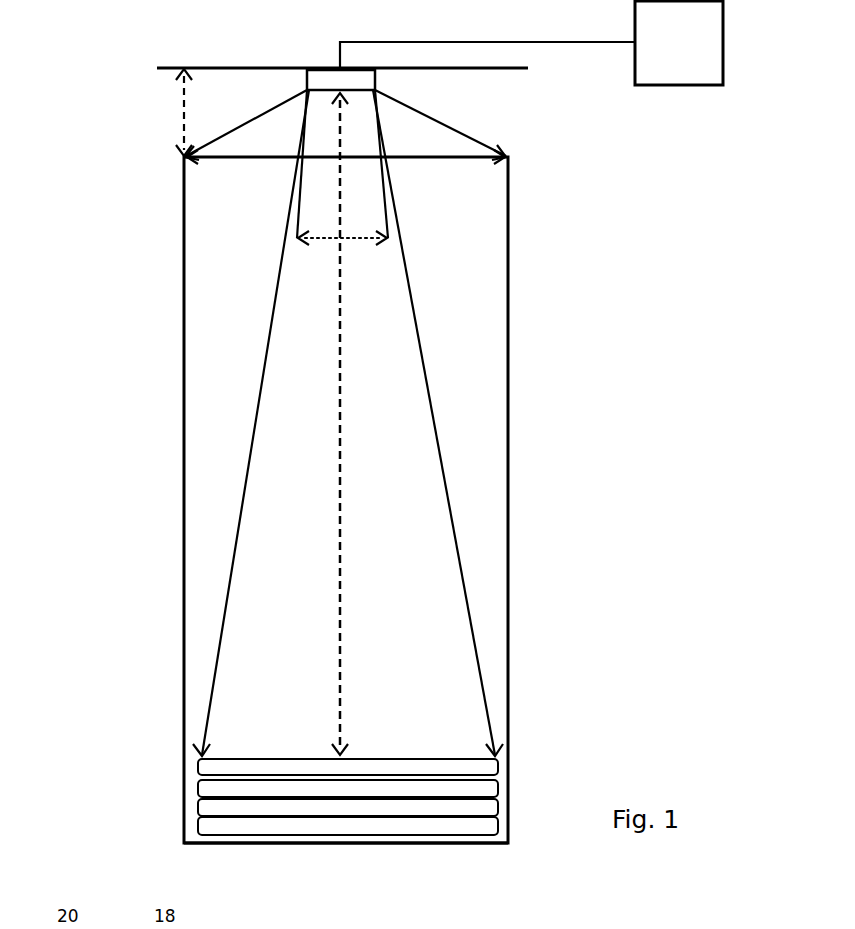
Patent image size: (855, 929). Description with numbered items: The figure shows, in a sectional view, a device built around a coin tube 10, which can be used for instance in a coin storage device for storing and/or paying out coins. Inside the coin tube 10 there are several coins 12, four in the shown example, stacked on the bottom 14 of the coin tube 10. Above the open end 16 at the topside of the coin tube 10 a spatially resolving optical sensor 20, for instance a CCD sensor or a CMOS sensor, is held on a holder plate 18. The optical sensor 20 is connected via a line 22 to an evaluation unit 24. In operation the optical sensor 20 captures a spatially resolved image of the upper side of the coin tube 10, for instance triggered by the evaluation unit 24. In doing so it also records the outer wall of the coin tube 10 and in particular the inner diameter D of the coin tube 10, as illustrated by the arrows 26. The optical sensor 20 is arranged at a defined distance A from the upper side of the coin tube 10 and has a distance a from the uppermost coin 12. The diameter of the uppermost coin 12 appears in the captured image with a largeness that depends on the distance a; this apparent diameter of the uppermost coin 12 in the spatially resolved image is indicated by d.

The coin tube 10 is at (510, 487).
The coins 12 is at (477, 789).
The bottom 14 is at (487, 843).
The open end 16 is at (508, 157).
The holder plate 18 is at (203, 68).
The optical sensor 20 is at (322, 80).
The line 22 is at (587, 42).
The evaluation unit 24 is at (697, 57).
The arrows 26 is at (450, 127).
The distance A is at (180, 100).
The inner diameter D is at (435, 160).
The diameter d is at (325, 240).
The distance a is at (340, 532).